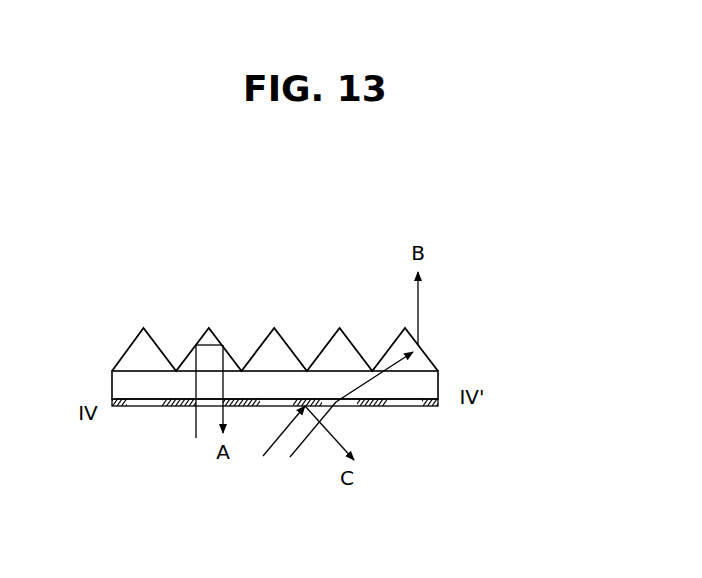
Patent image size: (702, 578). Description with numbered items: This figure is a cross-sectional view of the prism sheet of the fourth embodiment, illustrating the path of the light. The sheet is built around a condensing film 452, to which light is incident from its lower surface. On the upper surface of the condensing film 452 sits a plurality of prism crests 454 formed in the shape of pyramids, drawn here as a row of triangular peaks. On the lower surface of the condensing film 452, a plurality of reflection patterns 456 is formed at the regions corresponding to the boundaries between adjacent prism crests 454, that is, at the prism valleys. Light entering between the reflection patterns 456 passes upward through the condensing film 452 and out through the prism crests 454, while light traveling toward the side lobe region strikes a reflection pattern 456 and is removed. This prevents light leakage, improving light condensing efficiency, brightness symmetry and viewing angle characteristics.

The condensing film 452 is at (438, 403).
The prism crests 454 is at (427, 352).
The reflection patterns 456 is at (377, 407).